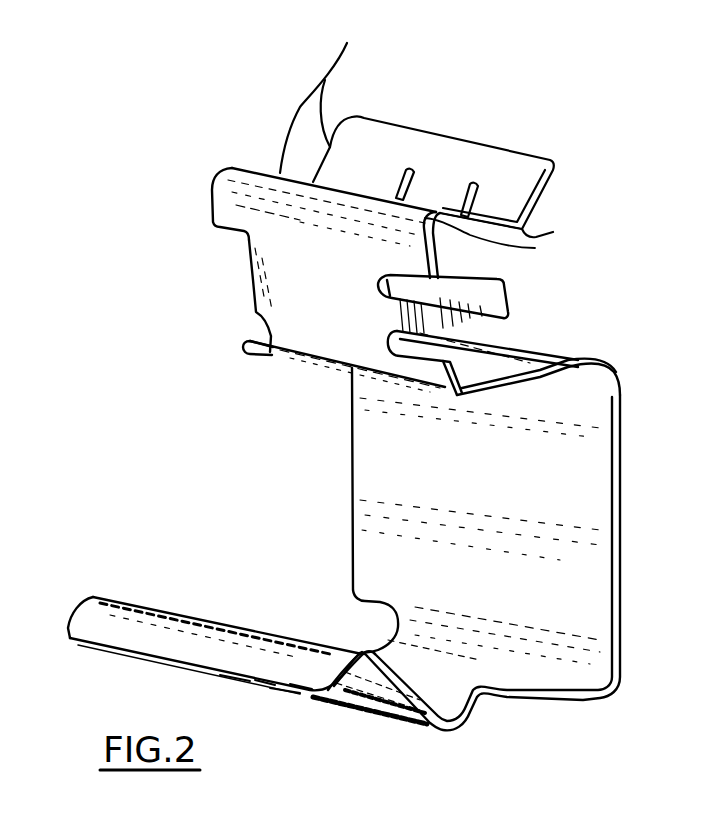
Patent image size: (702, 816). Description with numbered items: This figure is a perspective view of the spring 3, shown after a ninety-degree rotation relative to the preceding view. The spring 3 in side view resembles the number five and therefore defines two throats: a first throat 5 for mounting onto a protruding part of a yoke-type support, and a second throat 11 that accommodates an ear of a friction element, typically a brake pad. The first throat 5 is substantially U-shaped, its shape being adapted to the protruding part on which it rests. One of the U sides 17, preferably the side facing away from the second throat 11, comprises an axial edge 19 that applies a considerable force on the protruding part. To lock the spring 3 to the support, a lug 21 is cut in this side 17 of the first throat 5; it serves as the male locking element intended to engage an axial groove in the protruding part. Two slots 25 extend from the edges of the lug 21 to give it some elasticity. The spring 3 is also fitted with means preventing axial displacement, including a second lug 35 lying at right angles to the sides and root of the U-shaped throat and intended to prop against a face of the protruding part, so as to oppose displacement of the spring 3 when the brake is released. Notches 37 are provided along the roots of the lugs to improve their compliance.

The spring 3 is at (240, 150).
The first throat 5 is at (480, 258).
The side of the U-shaped throat 17 is at (352, 40).
The slots 25 is at (413, 167).
The axial edge 19 is at (553, 232).
The lug 21 is at (535, 248).
The second lug 35 is at (500, 316).
The notches 37 is at (503, 305).
The second throat 11 is at (303, 477).